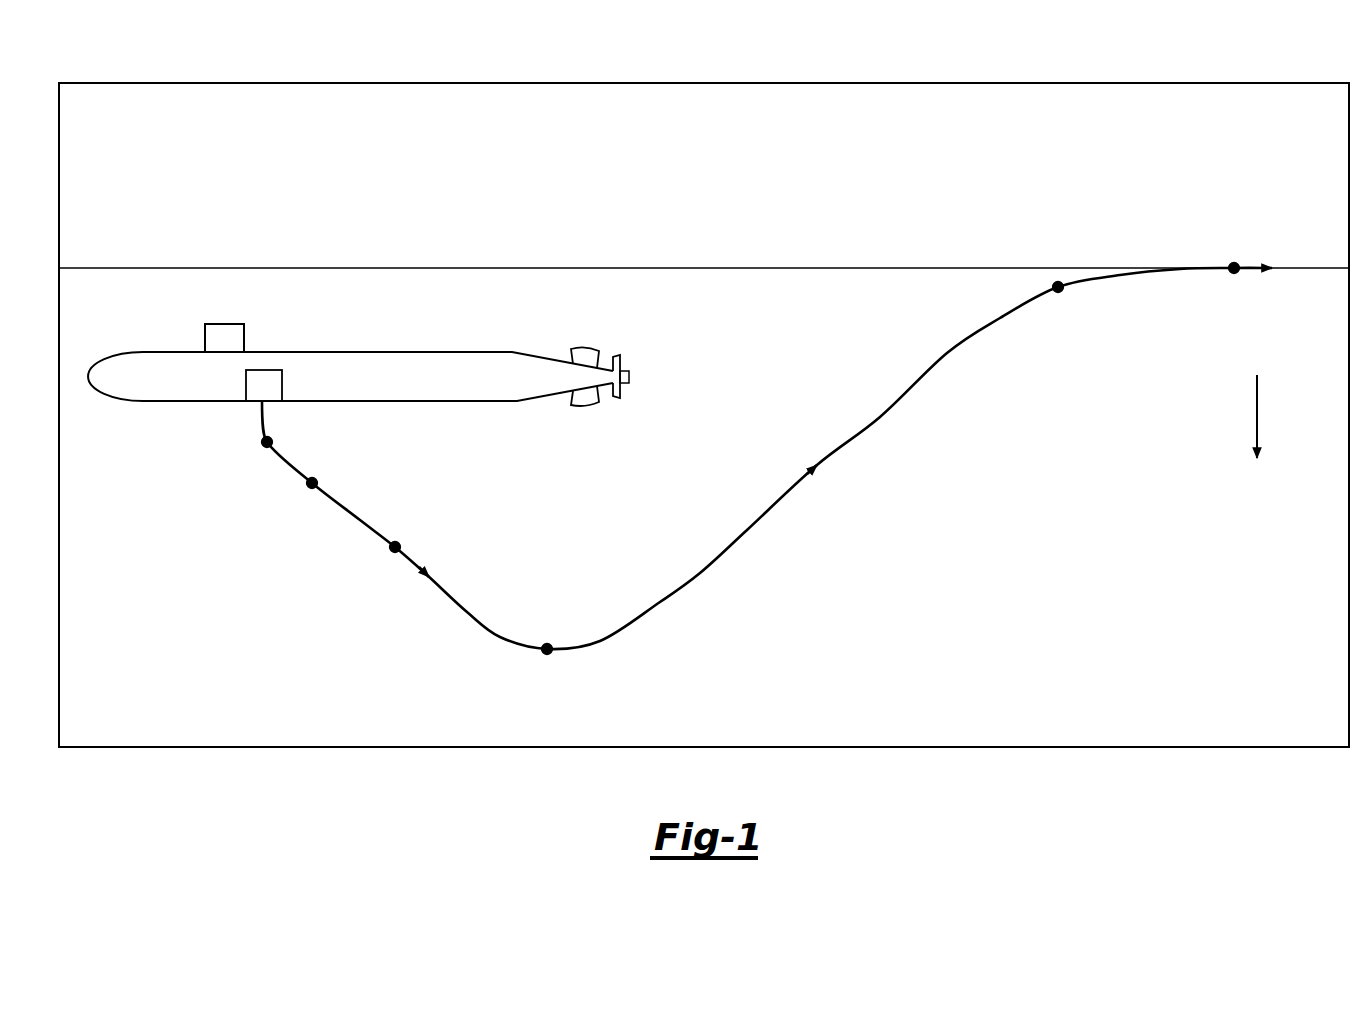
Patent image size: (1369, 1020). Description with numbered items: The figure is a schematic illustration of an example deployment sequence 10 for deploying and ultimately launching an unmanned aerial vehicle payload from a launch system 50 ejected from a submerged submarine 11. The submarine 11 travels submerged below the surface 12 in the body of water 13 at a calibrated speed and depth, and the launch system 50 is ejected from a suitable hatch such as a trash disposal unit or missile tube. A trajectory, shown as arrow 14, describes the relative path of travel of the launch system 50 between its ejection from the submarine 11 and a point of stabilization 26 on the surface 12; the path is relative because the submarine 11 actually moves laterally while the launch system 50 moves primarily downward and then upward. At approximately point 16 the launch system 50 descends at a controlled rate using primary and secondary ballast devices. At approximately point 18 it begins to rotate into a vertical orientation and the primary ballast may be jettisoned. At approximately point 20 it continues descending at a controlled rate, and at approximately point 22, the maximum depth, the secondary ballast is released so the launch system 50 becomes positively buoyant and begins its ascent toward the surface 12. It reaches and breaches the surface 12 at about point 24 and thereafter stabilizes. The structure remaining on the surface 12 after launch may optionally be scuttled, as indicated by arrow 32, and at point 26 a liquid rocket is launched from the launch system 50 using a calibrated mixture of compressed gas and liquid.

The deployment sequence 10 is at (297, 168).
The submarine 11 is at (407, 352).
The surface 12 is at (957, 266).
The body of water 13 is at (600, 532).
The trajectory 14 is at (360, 520).
The point 16 is at (271, 440).
The point 18 is at (316, 481).
The point 20 is at (399, 546).
The point 22 is at (547, 644).
The point 24 is at (1058, 283).
The point of stabilization 26 is at (1234, 264).
The arrow 32 is at (1257, 406).
The launch system 50 is at (264, 385).